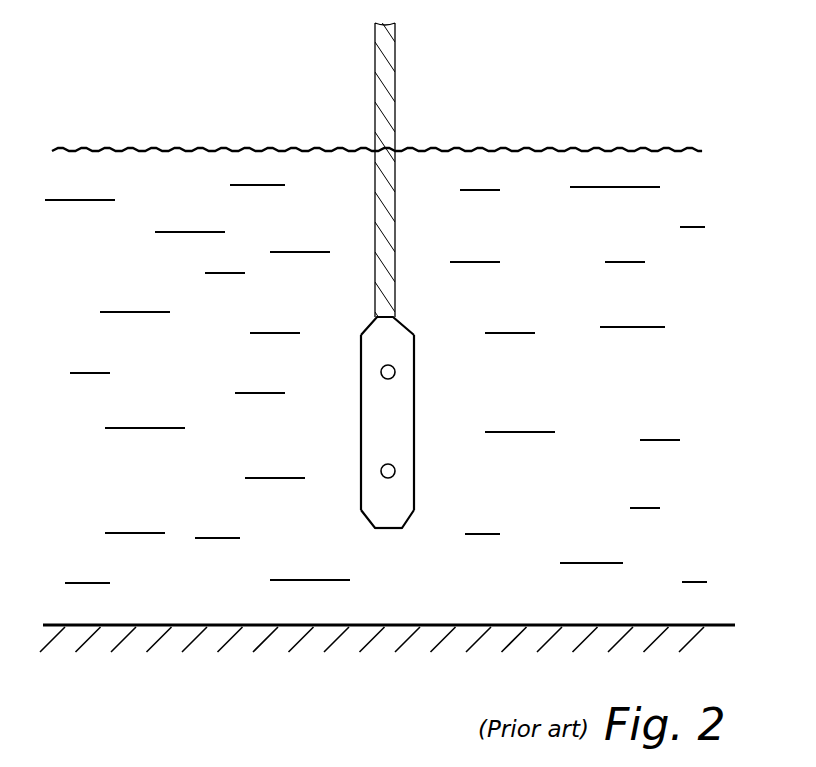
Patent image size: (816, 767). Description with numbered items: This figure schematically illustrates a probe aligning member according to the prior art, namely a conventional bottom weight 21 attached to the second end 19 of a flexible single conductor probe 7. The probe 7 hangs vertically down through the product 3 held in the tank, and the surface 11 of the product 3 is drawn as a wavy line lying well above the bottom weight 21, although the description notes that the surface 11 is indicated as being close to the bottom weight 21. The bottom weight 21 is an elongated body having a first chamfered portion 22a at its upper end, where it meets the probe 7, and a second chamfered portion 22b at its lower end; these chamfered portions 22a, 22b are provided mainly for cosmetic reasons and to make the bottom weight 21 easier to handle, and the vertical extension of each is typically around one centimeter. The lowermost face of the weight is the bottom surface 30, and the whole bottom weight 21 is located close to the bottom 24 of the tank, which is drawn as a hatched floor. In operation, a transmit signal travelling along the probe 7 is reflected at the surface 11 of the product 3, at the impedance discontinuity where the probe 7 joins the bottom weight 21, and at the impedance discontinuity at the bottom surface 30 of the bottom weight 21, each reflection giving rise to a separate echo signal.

The surface 11 is at (247, 150).
The product 3 is at (186, 378).
The flexible single conductor probe 7 is at (387, 230).
The second end 19 is at (338, 300).
The first chamfered portion 22a is at (420, 328).
The bottom weight 21 is at (415, 403).
The second chamfered portion 22b is at (420, 521).
The bottom surface 30 is at (386, 528).
The bottom 24 is at (553, 625).